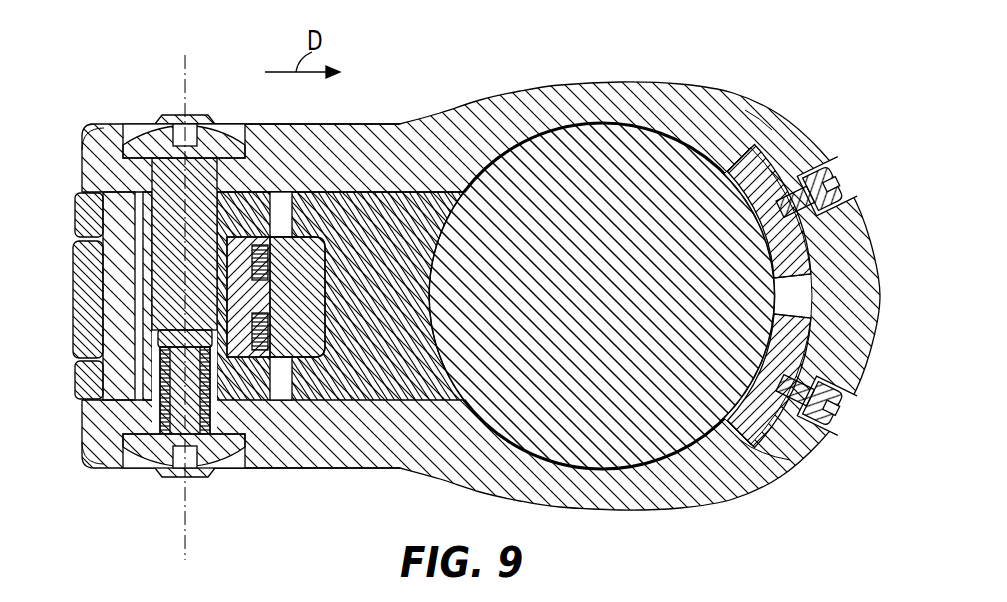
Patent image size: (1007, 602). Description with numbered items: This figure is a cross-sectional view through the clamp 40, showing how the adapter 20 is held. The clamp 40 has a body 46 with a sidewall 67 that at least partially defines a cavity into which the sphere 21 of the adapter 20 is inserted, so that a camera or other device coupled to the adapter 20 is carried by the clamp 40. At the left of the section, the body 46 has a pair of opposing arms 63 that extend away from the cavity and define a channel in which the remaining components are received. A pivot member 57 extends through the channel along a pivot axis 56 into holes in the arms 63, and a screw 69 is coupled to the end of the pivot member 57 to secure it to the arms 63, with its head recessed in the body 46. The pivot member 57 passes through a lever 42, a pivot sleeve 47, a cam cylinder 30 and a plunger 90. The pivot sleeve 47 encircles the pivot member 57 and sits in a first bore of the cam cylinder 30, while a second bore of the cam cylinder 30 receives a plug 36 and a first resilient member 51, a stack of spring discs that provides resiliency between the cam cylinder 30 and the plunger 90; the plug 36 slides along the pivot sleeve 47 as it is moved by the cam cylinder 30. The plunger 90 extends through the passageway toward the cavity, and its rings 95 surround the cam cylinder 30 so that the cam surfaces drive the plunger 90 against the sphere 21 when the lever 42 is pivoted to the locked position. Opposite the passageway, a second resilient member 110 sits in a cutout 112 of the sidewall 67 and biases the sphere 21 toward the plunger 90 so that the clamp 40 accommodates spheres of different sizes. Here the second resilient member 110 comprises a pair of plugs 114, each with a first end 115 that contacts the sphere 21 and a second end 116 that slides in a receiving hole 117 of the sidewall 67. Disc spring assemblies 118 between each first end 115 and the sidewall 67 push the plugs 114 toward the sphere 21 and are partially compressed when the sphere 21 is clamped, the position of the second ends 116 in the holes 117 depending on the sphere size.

The adapter 20 is at (647, 150).
The sphere 21 is at (592, 157).
The cam cylinder 30 is at (117, 292).
The plug 36 is at (240, 337).
The clamp 40 is at (689, 74).
The lever 42 is at (73, 210).
The body 46 is at (507, 122).
The pivot sleeve 47 is at (82, 253).
The first resilient member 51 is at (232, 200).
The pivot axis 56 is at (185, 511).
The pivot member 57 is at (182, 298).
The arms 63 is at (97, 148).
The sidewall 67 is at (737, 123).
The screw 69 is at (218, 462).
The plunger 90 is at (376, 225).
The rings 95 is at (73, 180).
The second resilient member 110 is at (850, 122).
The cutout 112 is at (800, 285).
The plugs 114 is at (780, 173).
The first end 115 is at (838, 300).
The second end 116 is at (800, 160).
The receiving hole 117 is at (861, 186).
The disc spring assemblies 118 is at (780, 450).